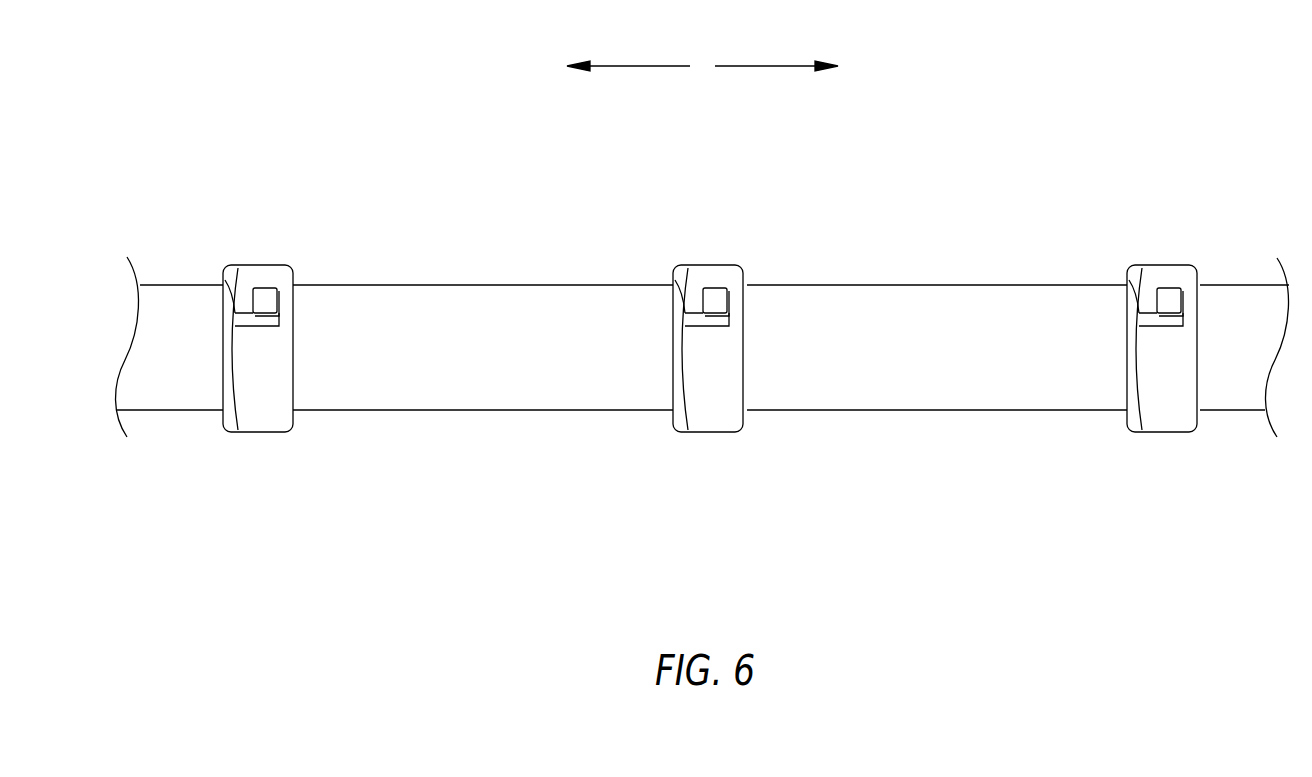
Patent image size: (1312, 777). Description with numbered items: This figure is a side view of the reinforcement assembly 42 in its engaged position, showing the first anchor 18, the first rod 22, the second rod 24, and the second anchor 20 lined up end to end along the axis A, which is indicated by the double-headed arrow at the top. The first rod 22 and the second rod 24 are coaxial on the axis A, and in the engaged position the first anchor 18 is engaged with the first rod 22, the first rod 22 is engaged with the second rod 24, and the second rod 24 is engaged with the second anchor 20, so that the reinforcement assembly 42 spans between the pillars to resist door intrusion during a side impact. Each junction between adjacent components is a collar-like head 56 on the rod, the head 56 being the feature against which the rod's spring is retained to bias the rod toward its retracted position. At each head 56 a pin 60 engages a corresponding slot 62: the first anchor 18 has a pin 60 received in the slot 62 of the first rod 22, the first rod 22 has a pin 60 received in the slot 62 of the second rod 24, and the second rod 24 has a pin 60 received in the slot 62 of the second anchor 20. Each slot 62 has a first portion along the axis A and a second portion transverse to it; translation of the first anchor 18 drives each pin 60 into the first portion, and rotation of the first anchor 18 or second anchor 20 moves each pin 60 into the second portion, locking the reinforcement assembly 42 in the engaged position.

The first anchor 18 is at (185, 411).
The second anchor 20 is at (1232, 411).
The first rod 22 is at (485, 411).
The second rod 24 is at (937, 411).
The reinforcement assembly 42 is at (702, 399).
The head 56 is at (258, 432).
The pin 60 is at (263, 292).
The slot 62 is at (242, 323).
The axis A is at (702, 67).